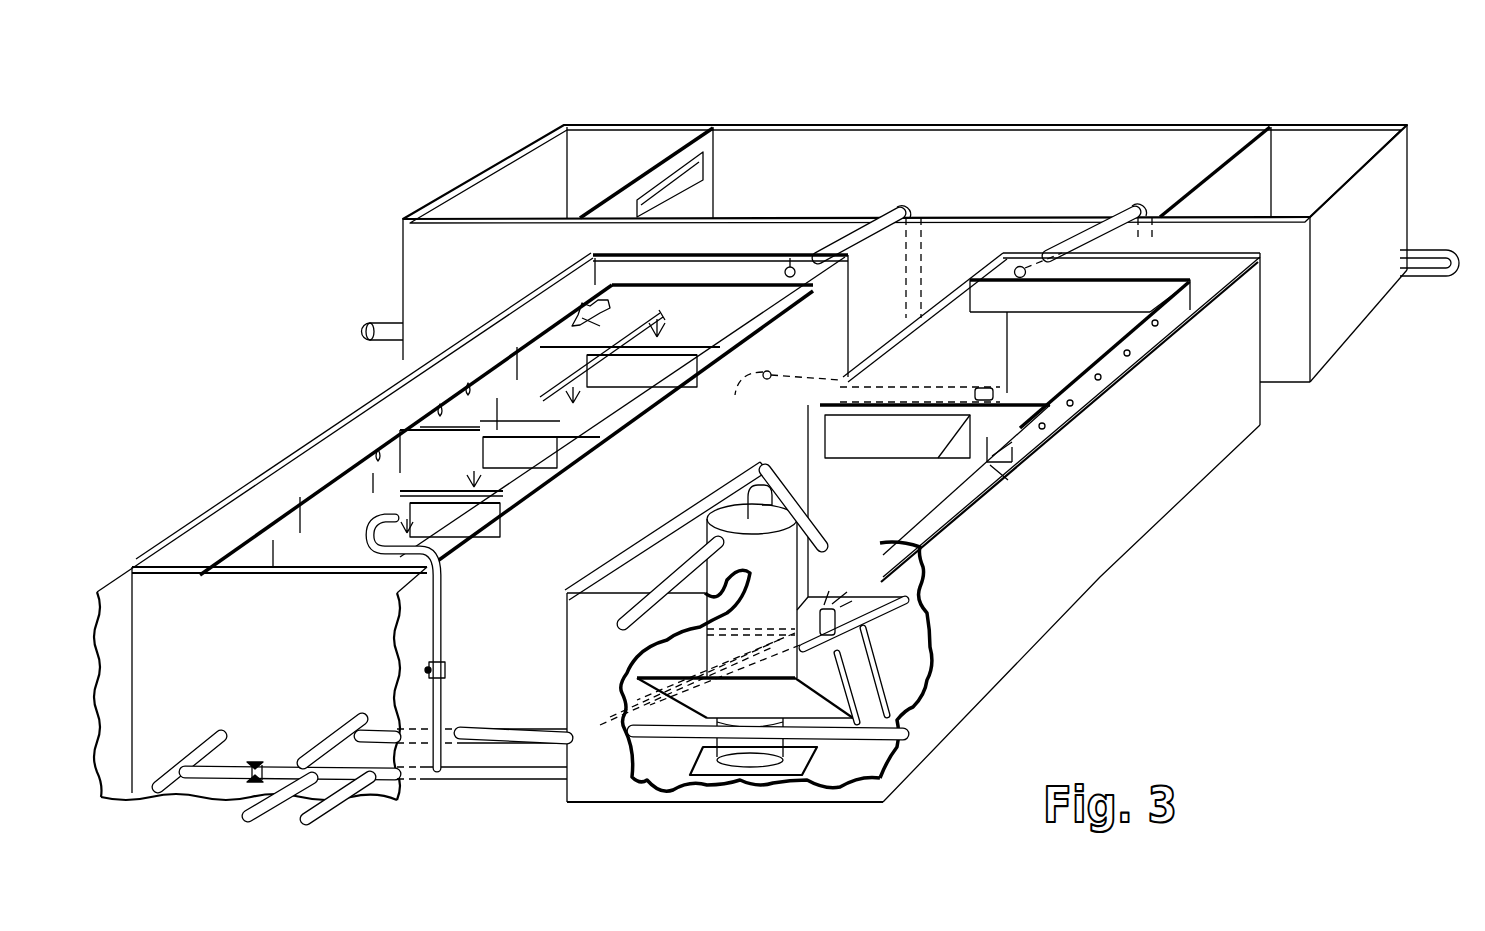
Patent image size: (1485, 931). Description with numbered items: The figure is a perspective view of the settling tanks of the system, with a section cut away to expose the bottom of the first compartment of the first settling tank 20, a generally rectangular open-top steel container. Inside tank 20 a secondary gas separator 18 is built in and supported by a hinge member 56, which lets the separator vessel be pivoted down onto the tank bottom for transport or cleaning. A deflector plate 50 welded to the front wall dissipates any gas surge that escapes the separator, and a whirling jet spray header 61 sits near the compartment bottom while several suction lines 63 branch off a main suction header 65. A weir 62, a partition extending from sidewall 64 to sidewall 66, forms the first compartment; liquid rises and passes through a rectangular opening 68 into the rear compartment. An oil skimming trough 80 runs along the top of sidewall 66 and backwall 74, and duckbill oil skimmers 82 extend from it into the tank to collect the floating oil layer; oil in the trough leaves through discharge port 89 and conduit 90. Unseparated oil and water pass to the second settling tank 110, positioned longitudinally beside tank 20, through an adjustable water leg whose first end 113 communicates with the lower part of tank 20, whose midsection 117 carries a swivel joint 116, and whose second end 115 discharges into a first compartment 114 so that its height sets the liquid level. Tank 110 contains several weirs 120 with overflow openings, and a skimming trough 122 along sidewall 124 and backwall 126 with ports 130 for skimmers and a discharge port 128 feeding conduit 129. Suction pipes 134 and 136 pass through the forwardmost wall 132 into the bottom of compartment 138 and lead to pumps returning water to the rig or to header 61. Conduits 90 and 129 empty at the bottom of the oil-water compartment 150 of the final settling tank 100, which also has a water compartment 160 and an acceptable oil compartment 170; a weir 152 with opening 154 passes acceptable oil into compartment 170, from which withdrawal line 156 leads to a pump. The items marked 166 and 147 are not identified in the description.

The final settling tank 100 is at (903, 108).
The third compartment 170 is at (538, 177).
The first compartment 150 is at (1065, 152).
The second compartment 160 is at (1320, 138).
The weir 152 is at (672, 160).
The opening 154 is at (705, 168).
The hook / outlet pipe 166 is at (1445, 249).
The acceptable oil withdrawal line 156 is at (384, 323).
The conduit 129 is at (897, 203).
The conduit 90 is at (1137, 205).
The discharge port 128 is at (787, 262).
The second settling tank 110 is at (471, 522).
The forwardmost wall 132 is at (260, 681).
The sidewall 124 is at (183, 532).
The skimming trough 122 is at (350, 435).
The backwall 126 is at (620, 255).
The ports 130 is at (437, 405).
The weirs 120 is at (672, 342).
The shelf 147 is at (435, 488).
The first compartment 114 is at (677, 308).
The duckbill oil skimmers 82 is at (572, 316).
The compartment 138 is at (292, 540).
The suction pipe 134 is at (198, 752).
The suction pipe 136 is at (320, 752).
The first settling tank 20 is at (879, 514).
The backwall 74 is at (1236, 252).
The sidewall 66 is at (1071, 527).
The oil skimming trough 80 is at (1142, 345).
The weir 62 is at (923, 461).
The opening 68 is at (897, 436).
The sidewall 64 is at (893, 328).
The discharge port 89 is at (1013, 272).
The midsection 117 is at (876, 380).
The first end 113 is at (996, 390).
The swivel joint 116 is at (833, 376).
The second end 115 is at (739, 402).
The secondary gas separator 18 is at (722, 574).
The deflector plate 50 is at (745, 722).
The hinge member 56 is at (690, 757).
The main suction header 65 is at (830, 736).
The whirling jet spray header 61 is at (847, 585).
The suction lines 63 is at (868, 695).